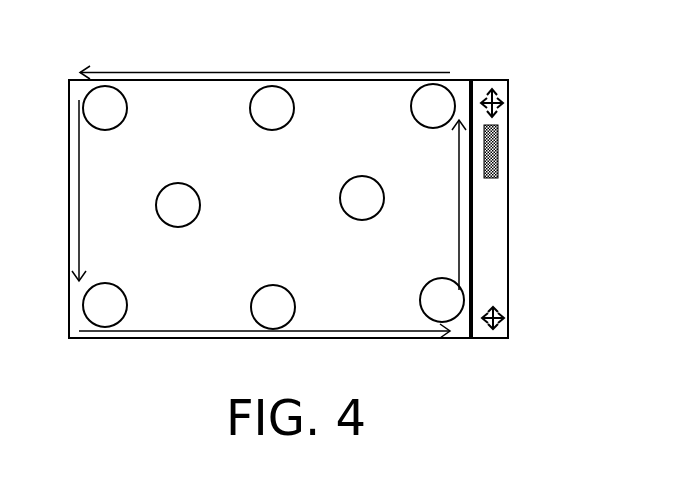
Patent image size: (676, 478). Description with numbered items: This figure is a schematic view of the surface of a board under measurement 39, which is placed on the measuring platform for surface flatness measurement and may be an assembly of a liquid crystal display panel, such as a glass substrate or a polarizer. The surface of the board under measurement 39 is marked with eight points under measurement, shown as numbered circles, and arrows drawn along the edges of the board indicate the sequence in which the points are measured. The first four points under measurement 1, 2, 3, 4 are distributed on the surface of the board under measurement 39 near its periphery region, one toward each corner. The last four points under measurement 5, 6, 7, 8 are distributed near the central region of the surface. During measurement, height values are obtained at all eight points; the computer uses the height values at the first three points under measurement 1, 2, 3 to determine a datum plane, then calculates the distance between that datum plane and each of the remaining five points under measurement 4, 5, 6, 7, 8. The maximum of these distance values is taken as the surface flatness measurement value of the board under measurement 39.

The board under measurement 39 is at (345, 90).
The point under measurement 1 is at (105, 108).
The point under measurement 2 is at (105, 305).
The point under measurement 3 is at (273, 307).
The point under measurement 4 is at (442, 300).
The point under measurement 5 is at (433, 106).
The point under measurement 6 is at (272, 108).
The point under measurement 7 is at (178, 205).
The point under measurement 8 is at (362, 198).